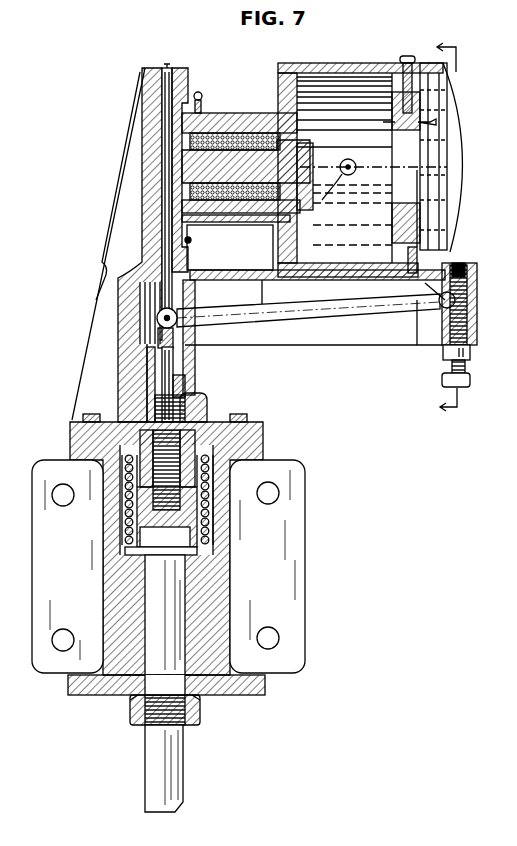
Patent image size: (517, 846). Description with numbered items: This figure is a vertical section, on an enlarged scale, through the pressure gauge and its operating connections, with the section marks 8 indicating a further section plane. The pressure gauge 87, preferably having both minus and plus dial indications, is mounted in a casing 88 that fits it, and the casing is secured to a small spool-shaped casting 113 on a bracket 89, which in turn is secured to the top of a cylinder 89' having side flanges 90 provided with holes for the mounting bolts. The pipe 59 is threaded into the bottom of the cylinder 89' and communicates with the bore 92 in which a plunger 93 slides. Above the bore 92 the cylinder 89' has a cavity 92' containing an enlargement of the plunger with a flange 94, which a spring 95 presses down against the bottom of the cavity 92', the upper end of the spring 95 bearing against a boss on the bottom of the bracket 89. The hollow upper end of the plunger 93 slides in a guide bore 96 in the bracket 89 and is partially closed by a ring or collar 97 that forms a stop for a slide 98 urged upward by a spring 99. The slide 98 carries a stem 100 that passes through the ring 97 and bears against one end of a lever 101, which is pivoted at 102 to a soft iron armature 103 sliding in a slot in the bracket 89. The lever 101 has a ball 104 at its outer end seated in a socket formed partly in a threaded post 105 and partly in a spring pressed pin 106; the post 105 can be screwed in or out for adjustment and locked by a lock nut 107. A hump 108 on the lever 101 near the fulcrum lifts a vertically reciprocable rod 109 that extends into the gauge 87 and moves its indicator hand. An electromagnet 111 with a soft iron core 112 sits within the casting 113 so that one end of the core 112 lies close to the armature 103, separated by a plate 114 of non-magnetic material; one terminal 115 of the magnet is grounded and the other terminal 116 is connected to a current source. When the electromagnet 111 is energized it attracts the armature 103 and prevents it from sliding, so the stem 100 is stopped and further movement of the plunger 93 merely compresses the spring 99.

The section line 8- 8 is at (437, 227).
The pipe 59 is at (180, 762).
The pressure gauge 87 is at (458, 126).
The casing 88 is at (362, 159).
The bracket 89 is at (165, 245).
The cylinder 89' is at (166, 701).
The side flanges 90 is at (305, 545).
The bore 92 is at (185, 710).
The cavity 92' is at (132, 503).
The plunger 93 is at (165, 615).
The flange 94 is at (205, 575).
The spring 95 is at (220, 472).
The guide bore 96 is at (195, 362).
The ring or collar 97 is at (195, 378).
The slide 98 is at (207, 403).
The spring 99 is at (166, 508).
The stem 100 is at (193, 345).
The lever 101 is at (308, 316).
The pivot 102 is at (172, 316).
The armature 103 is at (170, 68).
The ball 104 is at (470, 305).
The threaded post 105 is at (472, 336).
The spring pressed pin 106 is at (462, 272).
The lock nut 107 is at (471, 355).
The hump 108 is at (436, 318).
The rod 109 is at (425, 283).
The electromagnet 111 is at (222, 140).
The soft iron core 112 is at (248, 165).
The casting 113 is at (282, 82).
The plate 114 is at (177, 143).
The terminal 115 is at (208, 85).
The terminal 116 is at (323, 201).